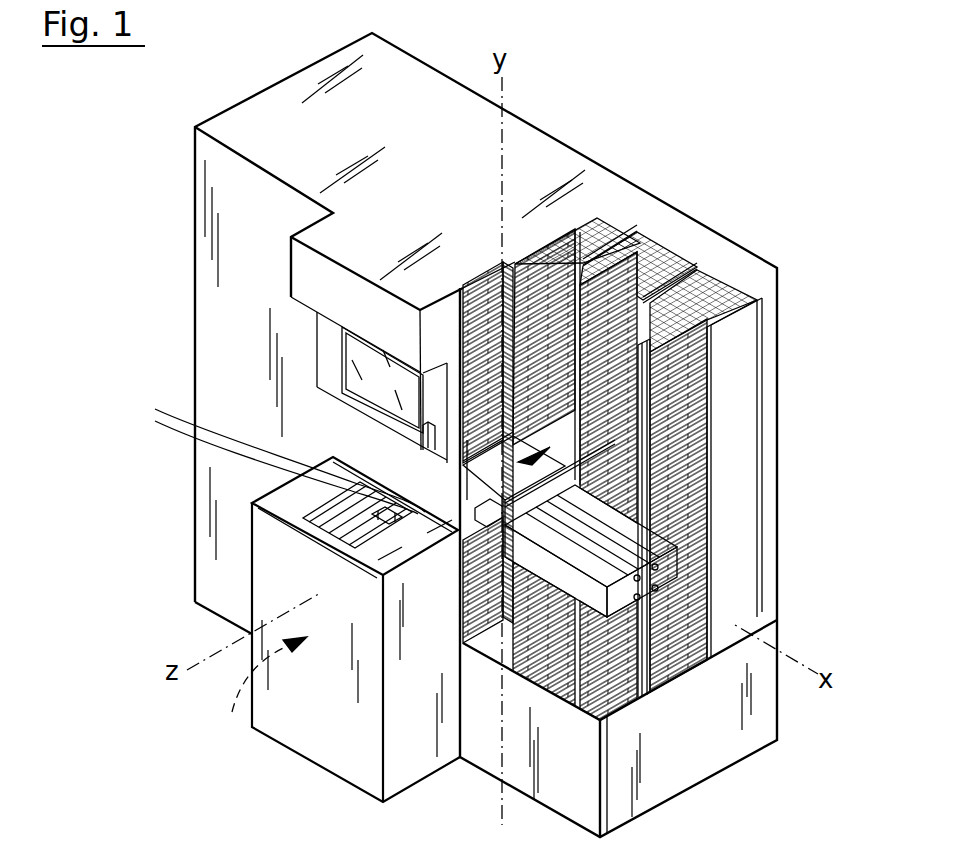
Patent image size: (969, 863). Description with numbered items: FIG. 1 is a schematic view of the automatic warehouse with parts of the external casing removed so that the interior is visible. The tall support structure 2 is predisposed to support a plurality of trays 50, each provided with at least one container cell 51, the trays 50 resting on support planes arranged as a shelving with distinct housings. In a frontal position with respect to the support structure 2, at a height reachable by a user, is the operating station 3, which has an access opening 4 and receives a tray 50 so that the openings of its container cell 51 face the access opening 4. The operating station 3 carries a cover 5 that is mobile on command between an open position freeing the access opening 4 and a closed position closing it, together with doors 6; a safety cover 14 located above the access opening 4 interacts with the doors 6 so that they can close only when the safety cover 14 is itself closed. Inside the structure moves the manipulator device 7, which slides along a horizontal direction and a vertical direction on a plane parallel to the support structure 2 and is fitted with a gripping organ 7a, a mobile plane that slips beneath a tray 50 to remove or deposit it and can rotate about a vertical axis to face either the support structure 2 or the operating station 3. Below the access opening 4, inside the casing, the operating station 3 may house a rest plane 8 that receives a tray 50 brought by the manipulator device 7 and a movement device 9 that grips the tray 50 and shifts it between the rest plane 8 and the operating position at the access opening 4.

The support structure 2 is at (730, 342).
The operating station 3 is at (243, 491).
The access opening 4 is at (330, 527).
The cover 5 is at (262, 454).
The doors 6 is at (290, 461).
The manipulator device 7 is at (640, 433).
The gripping organ 7a is at (570, 494).
The rest plane 8 is at (232, 701).
The movement device 9 is at (269, 674).
The safety cover 14 is at (345, 478).
The trays 50 is at (722, 292).
The container cell 51 is at (346, 498).